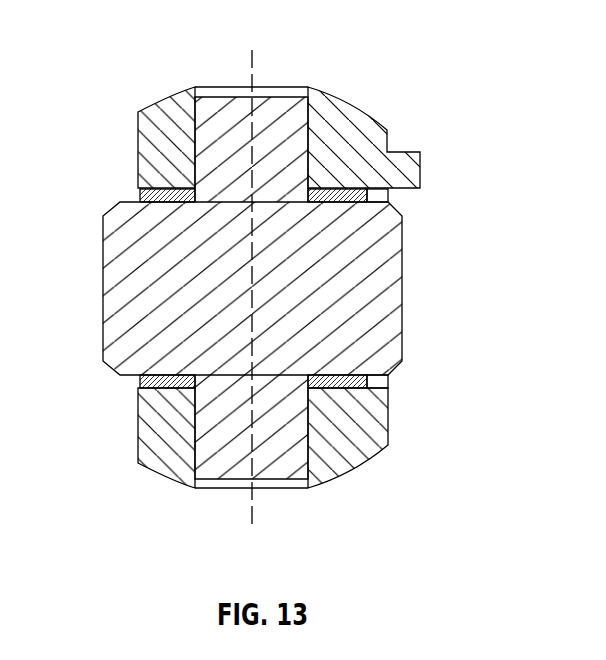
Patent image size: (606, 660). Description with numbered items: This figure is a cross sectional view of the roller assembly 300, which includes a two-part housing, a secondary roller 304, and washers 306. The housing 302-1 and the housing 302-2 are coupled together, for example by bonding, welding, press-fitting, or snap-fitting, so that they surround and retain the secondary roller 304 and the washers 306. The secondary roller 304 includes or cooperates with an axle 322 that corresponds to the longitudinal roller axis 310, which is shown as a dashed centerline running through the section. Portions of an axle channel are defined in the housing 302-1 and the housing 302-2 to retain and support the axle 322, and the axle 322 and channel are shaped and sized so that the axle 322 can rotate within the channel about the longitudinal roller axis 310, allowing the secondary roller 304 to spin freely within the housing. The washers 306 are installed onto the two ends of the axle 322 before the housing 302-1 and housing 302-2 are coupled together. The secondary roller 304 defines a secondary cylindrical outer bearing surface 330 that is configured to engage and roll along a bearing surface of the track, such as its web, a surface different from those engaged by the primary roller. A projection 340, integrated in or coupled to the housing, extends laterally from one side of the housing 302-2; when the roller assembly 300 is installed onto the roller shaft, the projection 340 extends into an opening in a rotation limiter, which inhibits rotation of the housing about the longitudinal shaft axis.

The roller assembly 300 is at (400, 33).
The housing 302-1 is at (162, 115).
The housing 302-2 is at (343, 125).
The secondary roller 304 is at (341, 284).
The washers 306 is at (357, 188).
The longitudinal roller axis 310 is at (252, 65).
The axle 322 is at (223, 118).
The secondary cylindrical outer bearing surface 330 is at (103, 285).
The projection 340 is at (408, 190).